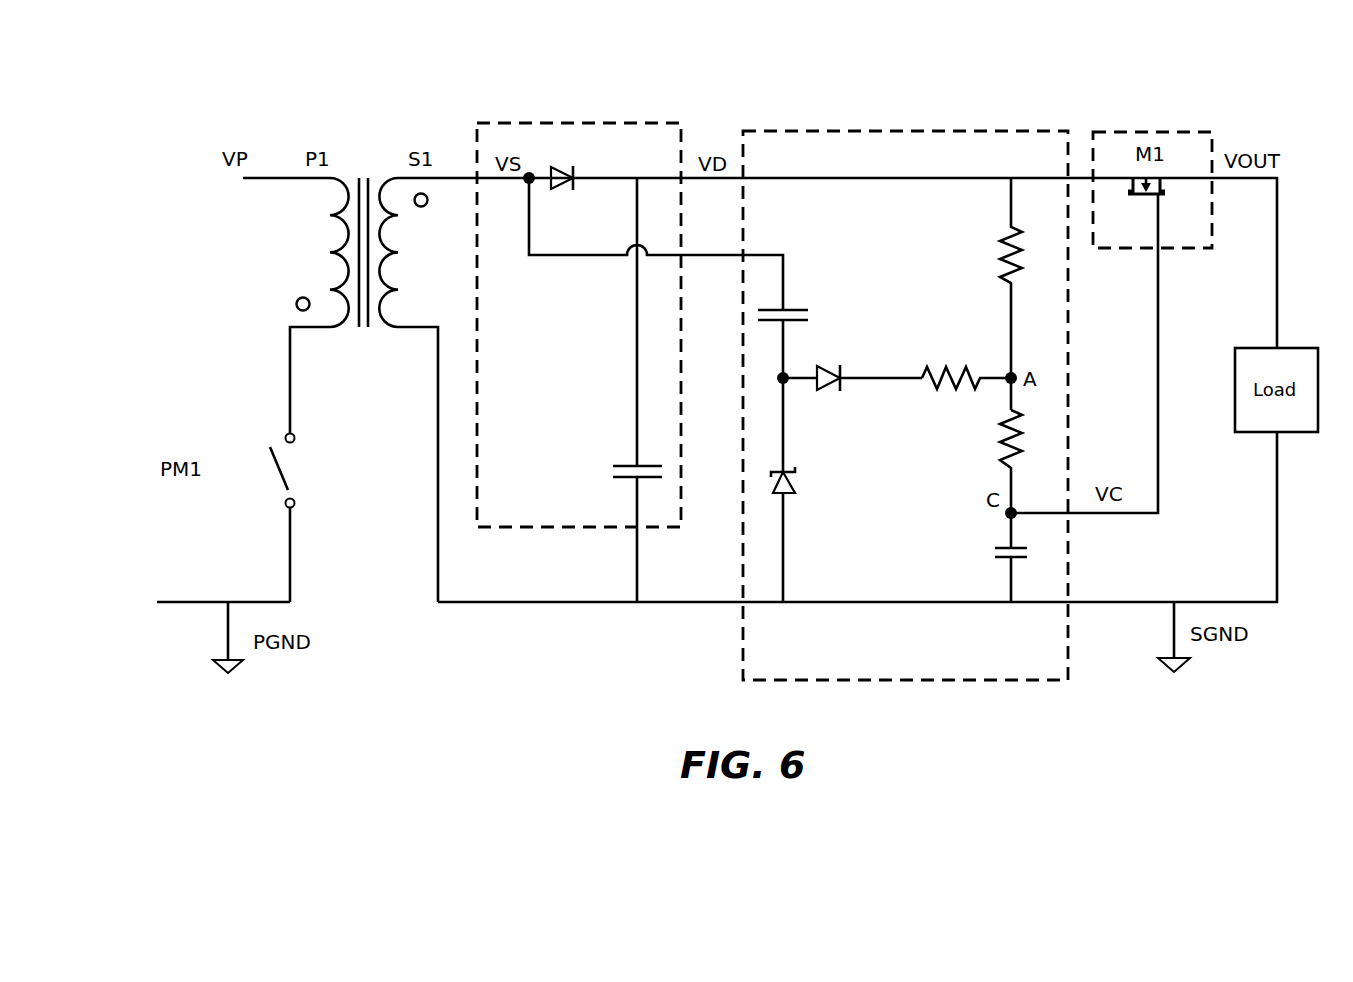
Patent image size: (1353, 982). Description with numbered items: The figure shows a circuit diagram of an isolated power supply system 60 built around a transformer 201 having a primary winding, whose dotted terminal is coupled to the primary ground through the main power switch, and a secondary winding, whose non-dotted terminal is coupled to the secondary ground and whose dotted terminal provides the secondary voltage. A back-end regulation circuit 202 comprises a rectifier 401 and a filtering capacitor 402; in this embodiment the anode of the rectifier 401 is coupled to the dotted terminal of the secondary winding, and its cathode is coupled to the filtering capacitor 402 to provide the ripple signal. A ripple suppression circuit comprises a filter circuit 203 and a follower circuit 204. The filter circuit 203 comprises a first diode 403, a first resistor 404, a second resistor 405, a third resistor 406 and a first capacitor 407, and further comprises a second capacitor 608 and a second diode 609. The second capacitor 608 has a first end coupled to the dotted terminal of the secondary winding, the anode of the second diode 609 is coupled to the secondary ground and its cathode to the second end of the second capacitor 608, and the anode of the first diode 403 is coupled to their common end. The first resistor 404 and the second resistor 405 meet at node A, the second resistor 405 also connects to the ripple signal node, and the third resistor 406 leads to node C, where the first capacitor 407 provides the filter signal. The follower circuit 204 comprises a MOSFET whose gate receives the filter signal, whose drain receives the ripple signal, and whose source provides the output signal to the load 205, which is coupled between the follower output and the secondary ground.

The isolated power supply system 60 is at (690, 80).
The transformer 201 is at (369, 172).
The back-end regulation circuit 202 is at (537, 512).
The filter circuit 203 is at (862, 131).
The follower circuit 204 is at (1212, 205).
The load 205 is at (1237, 351).
The rectifier 401 is at (556, 162).
The filtering capacitor 402 is at (637, 451).
The first diode 403 is at (853, 378).
The first resistor 404 is at (963, 363).
The second resistor 405 is at (995, 243).
The third resistor 406 is at (1000, 458).
The first capacitor 407 is at (991, 540).
The second capacitor 608 is at (808, 316).
The second diode 609 is at (797, 478).